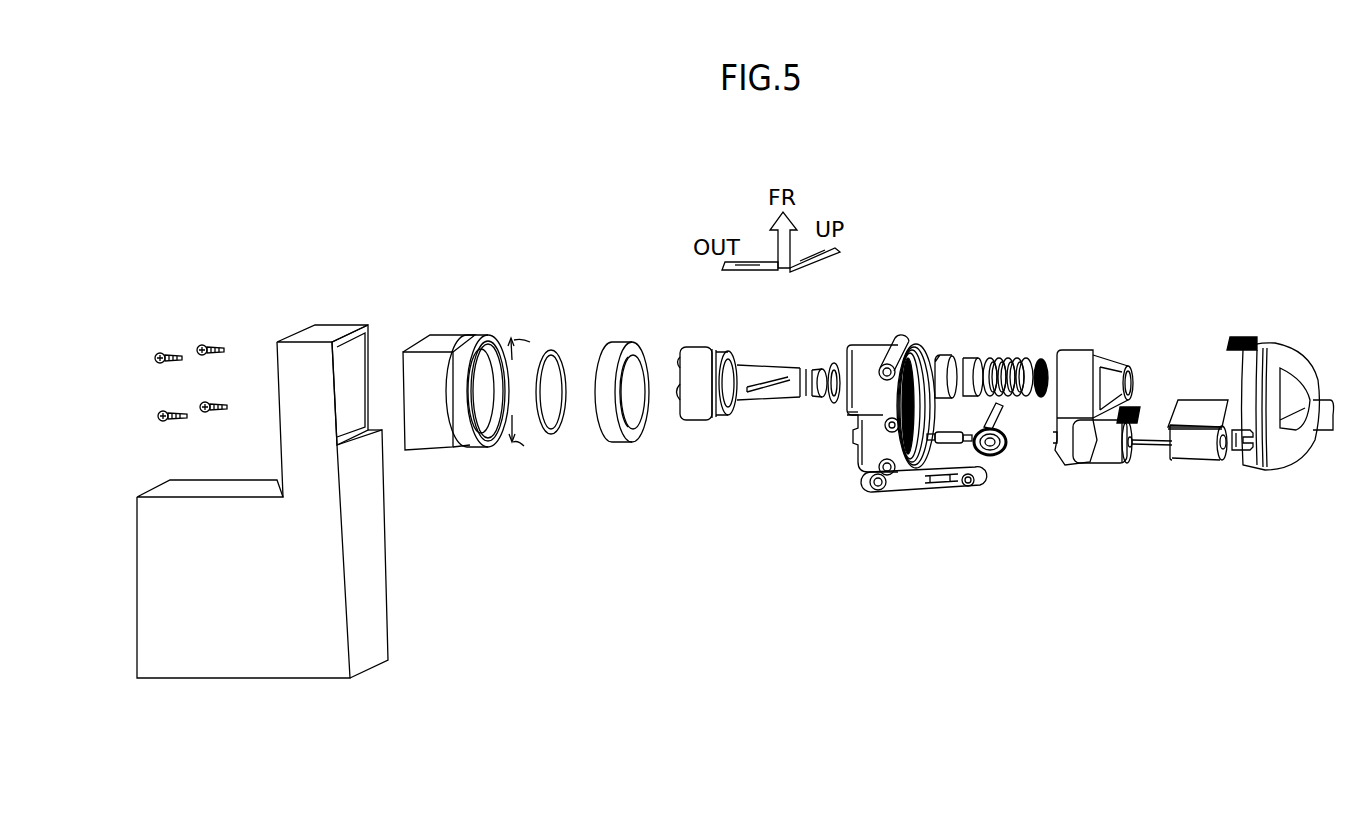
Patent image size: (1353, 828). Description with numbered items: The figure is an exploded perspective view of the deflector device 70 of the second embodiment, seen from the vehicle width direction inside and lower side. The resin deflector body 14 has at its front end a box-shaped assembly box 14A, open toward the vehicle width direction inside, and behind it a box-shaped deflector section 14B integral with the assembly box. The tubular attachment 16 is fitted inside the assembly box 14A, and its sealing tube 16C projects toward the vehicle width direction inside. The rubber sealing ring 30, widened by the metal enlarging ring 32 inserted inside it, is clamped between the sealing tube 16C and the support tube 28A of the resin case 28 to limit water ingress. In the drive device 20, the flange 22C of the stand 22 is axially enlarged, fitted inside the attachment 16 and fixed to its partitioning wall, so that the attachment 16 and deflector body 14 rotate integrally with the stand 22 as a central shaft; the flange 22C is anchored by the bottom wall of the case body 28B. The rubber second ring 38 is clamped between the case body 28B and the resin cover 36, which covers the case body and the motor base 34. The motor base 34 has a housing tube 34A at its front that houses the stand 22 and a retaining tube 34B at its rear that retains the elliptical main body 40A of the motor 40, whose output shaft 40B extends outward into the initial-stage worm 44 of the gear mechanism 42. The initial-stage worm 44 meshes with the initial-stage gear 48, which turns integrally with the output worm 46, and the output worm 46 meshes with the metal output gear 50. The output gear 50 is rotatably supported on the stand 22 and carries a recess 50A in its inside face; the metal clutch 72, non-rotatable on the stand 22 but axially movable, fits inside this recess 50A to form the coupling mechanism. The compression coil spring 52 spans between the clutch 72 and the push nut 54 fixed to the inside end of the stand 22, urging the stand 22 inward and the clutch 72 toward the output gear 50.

The deflector device 70 is at (397, 226).
The deflector body 14 is at (292, 337).
The assembly box 14A is at (337, 323).
The deflector section 14B is at (385, 575).
The attachment 16 is at (420, 342).
The sealing tube 16C is at (487, 338).
The enlarging ring 32 is at (565, 353).
The sealing ring 30 is at (623, 342).
The flange 22C is at (708, 347).
The stand 22 is at (765, 365).
The drive device 20 is at (1031, 290).
The case 28 is at (852, 345).
The support tube 28A is at (847, 412).
The case body 28B is at (883, 343).
The second ring 38 is at (920, 345).
The output gear 50 is at (947, 357).
The recess 50A is at (972, 358).
The clutch 72 is at (977, 358).
The compression coil spring 52 is at (1002, 358).
The push nut 54 is at (1037, 358).
The gear mechanism 42 is at (1013, 485).
The initial-stage worm 44 is at (952, 444).
The output worm 46 is at (1002, 422).
The initial-stage gear 48 is at (990, 456).
The motor base 34 is at (1080, 350).
The housing tube 34A is at (1097, 353).
The retaining tube 34B is at (1097, 463).
The motor 40 is at (1195, 460).
The output shaft 40B is at (1153, 437).
The main body 40A is at (1170, 462).
The cover 36 is at (1292, 345).